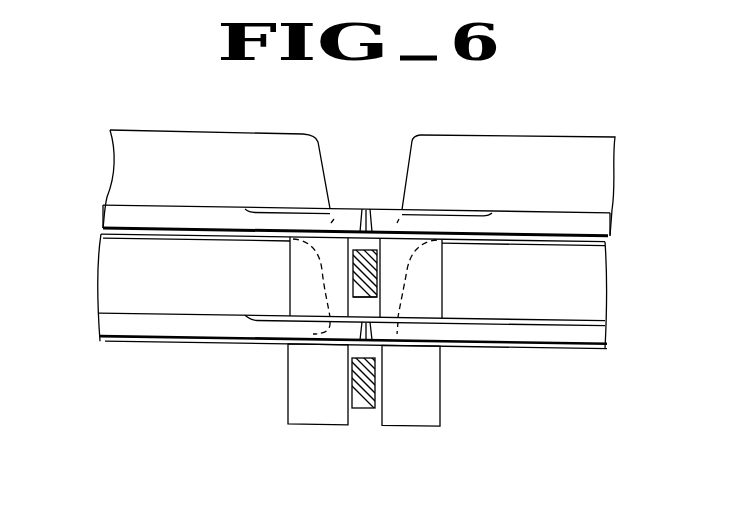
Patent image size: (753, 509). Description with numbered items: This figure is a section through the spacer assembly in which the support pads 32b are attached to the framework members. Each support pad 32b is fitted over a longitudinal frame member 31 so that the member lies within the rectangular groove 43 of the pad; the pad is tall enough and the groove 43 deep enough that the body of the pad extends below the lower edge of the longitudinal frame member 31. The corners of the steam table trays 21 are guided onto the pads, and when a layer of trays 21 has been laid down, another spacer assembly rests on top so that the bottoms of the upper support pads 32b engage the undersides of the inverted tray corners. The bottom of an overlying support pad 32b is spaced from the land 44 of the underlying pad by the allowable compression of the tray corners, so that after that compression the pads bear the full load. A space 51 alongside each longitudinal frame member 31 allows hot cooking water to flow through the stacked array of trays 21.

The steam table tray 21 is at (413, 146).
The longitudinal frame member 31 is at (352, 276).
The rectangular groove 43 is at (376, 256).
The land 44 is at (366, 209).
The space 51 is at (364, 304).
The support pad 32b is at (444, 362).